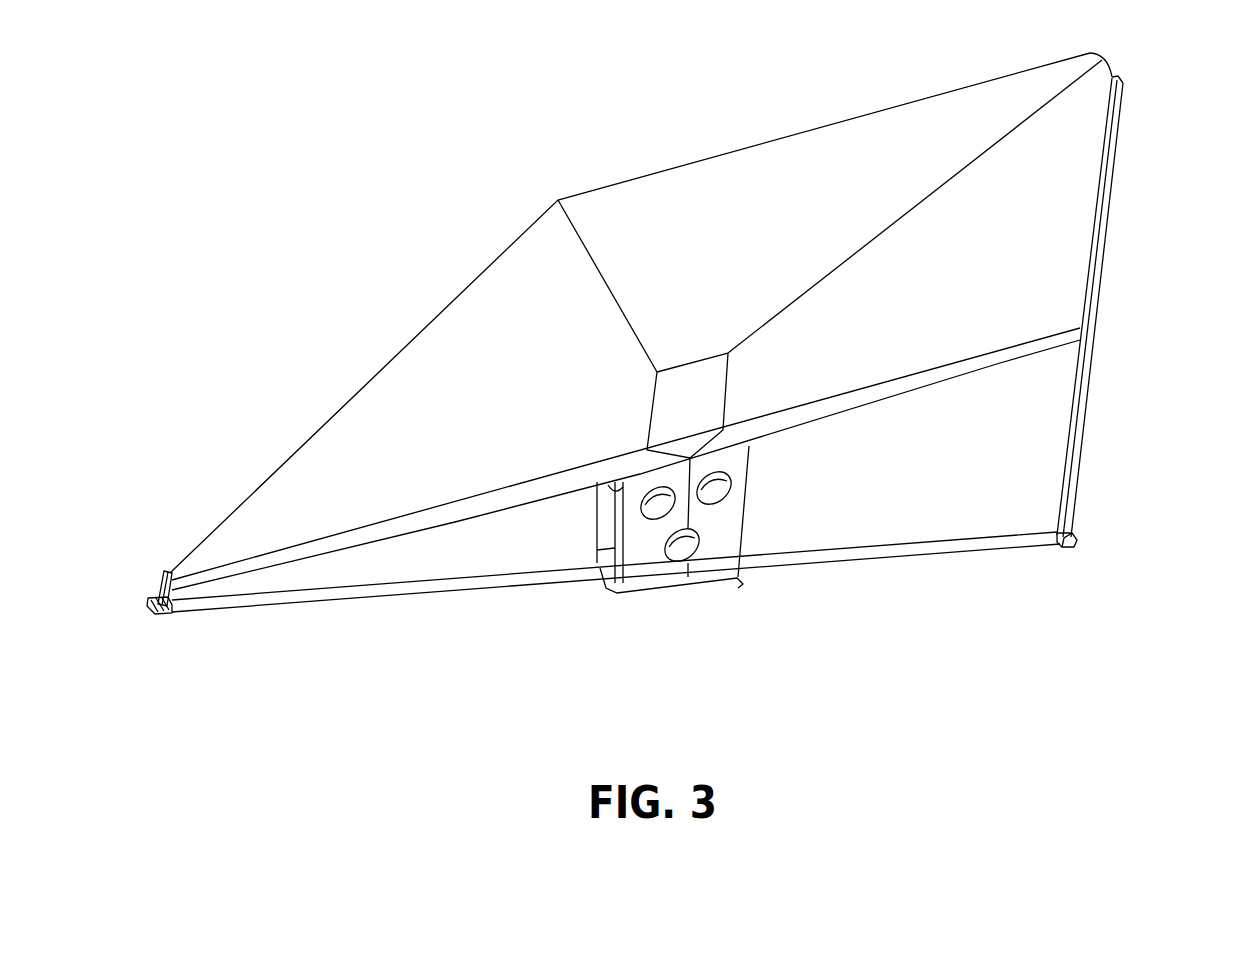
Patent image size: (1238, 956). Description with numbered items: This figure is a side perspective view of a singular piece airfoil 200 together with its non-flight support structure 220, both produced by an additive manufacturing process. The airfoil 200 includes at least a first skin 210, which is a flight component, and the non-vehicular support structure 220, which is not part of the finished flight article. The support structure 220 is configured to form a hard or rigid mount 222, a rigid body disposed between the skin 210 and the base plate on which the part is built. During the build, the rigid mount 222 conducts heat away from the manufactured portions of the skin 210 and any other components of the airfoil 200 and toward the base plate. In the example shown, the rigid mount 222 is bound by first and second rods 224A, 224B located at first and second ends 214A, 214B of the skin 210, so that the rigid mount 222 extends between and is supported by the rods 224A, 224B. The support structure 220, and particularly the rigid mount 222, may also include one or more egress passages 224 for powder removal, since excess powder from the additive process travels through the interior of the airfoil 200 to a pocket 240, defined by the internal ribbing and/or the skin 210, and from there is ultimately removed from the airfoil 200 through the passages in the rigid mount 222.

The airfoil 200 is at (493, 236).
The first skin 210 is at (332, 452).
The first end 214A is at (168, 572).
The second end 214B is at (1087, 288).
The non-flight support structure 220 is at (848, 512).
The rigid mount 222 is at (616, 578).
The mounting holes 224 is at (717, 510).
The first rod 224A is at (160, 600).
The second rod 224B is at (1070, 482).
The pocket 240 is at (682, 397).